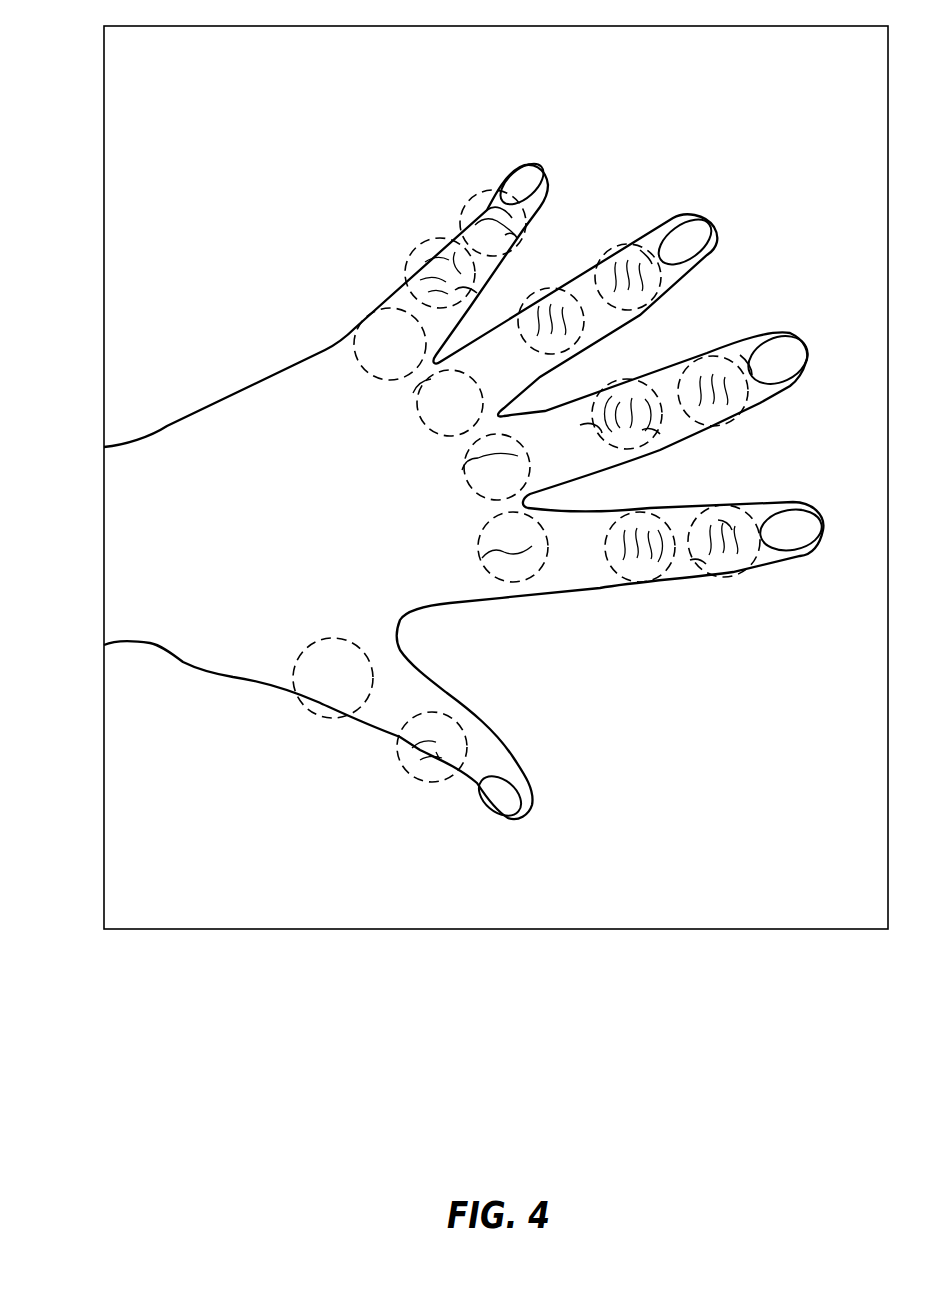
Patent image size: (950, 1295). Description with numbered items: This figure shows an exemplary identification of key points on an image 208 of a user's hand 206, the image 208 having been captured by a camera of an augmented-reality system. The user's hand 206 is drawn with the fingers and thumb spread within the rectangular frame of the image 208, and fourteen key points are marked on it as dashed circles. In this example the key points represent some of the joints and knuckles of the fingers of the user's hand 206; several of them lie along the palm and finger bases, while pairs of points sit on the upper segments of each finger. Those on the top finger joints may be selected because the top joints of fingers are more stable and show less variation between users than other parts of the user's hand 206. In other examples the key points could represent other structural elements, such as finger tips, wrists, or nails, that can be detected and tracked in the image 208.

The user's hand 206 is at (167, 427).
The image 208 is at (497, 929).